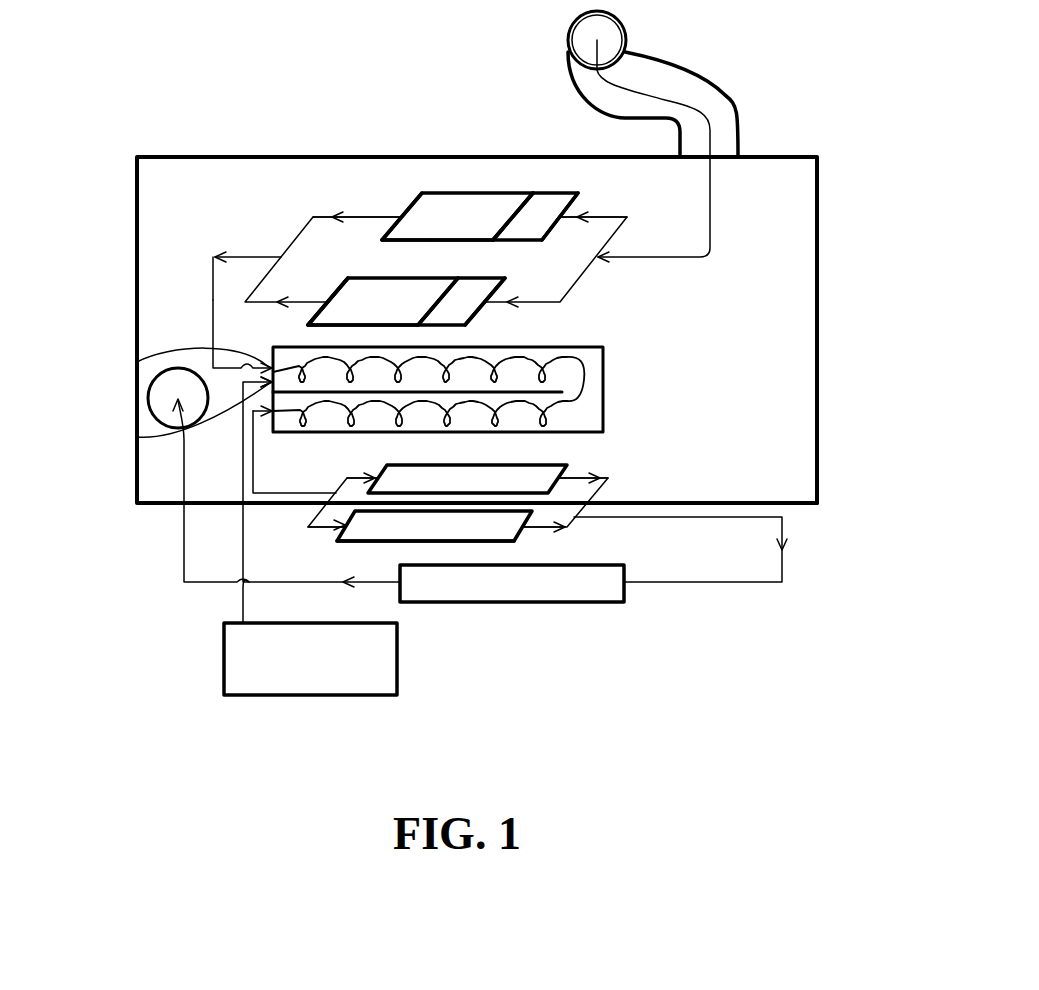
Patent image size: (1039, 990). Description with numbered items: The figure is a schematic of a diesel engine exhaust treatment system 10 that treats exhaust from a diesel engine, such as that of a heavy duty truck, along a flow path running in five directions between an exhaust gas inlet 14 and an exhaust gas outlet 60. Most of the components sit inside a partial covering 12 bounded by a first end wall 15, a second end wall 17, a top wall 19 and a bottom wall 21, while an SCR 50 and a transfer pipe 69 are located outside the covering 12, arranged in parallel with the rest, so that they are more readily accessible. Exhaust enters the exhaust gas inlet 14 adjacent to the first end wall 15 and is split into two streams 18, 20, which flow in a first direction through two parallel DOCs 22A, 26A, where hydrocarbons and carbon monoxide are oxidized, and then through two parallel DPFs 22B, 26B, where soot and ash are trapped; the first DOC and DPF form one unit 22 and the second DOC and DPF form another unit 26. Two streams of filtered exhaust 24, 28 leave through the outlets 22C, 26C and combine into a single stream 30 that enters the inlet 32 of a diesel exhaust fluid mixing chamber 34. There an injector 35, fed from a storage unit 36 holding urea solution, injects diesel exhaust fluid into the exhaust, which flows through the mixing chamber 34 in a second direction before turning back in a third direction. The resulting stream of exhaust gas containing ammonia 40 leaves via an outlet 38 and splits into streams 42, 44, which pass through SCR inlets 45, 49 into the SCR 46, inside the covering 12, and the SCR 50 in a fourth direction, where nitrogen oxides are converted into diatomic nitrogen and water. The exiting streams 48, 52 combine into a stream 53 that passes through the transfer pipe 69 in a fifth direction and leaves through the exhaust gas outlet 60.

The diesel engine exhaust treatment system 10 is at (891, 615).
The covering 12 is at (264, 156).
The exhaust gas inlet 14 is at (605, 41).
The first end wall 15 is at (820, 464).
The second end wall 17 is at (137, 191).
The stream of exhaust gas 18 is at (568, 295).
The top wall 19 is at (315, 156).
The stream of exhaust gas 20 is at (566, 282).
The bottom wall 21 is at (808, 515).
The first plate 22 is at (497, 193).
The DOC 22A is at (542, 200).
The DPF 22B is at (460, 222).
The outlet 22C is at (393, 218).
The stream of filtered exhaust 24 is at (313, 218).
The second plate 26 is at (415, 278).
The DOC 26A is at (480, 295).
The DPF 26B is at (363, 295).
The outlet 26C is at (328, 300).
The stream of filtered exhaust 28 is at (213, 277).
The single stream 30 is at (213, 307).
The inlet 32 is at (137, 362).
The diesel exhaust fluid mixing chamber 34 is at (605, 372).
The injector 35 is at (137, 437).
The storage unit 36 is at (315, 697).
The outlet 38 is at (266, 412).
The stream of exhaust gas containing ammonia 40 is at (254, 470).
The stream 42 is at (337, 487).
The stream 44 is at (323, 523).
The SCR inlet 45 is at (375, 477).
The SCR 46 is at (538, 478).
The stream 48 is at (596, 497).
The SCR inlet 49 is at (340, 540).
The SCR 50 is at (498, 528).
The stream 52 is at (577, 519).
The stream 53 is at (736, 583).
The exhaust gas outlet 60 is at (160, 398).
The transfer pipe 69 is at (576, 603).